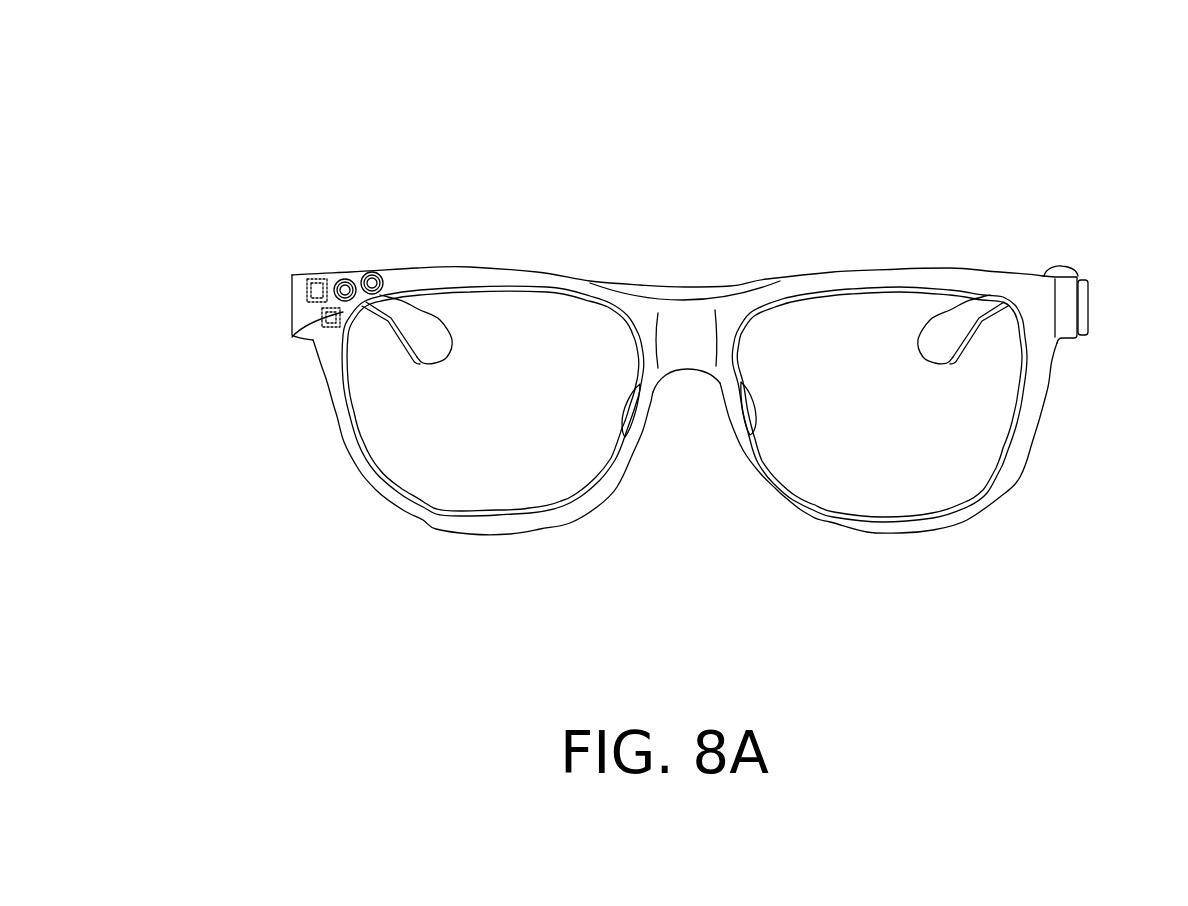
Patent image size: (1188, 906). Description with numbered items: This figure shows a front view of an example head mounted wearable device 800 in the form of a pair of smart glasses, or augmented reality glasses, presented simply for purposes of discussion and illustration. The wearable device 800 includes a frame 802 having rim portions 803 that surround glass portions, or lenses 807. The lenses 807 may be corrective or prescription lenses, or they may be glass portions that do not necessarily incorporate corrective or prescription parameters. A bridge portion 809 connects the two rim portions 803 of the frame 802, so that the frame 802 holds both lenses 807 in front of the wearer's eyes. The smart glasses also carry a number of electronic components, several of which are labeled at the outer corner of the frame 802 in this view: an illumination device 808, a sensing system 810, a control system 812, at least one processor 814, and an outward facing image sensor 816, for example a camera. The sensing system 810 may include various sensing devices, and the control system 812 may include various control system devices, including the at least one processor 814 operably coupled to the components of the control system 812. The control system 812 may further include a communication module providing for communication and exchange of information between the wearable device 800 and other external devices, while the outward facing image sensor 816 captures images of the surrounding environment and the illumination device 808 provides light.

The head mounted wearable device 800 is at (849, 172).
The frame 802 is at (947, 272).
The rim portion 803 is at (398, 508).
The lens 807 is at (468, 480).
The bridge portion 809 is at (686, 313).
The sensing system 810 is at (292, 335).
The control system 812 is at (322, 276).
The processor 814 is at (310, 277).
The outward facing image sensor 816 is at (350, 277).
The illumination device 808 is at (376, 277).